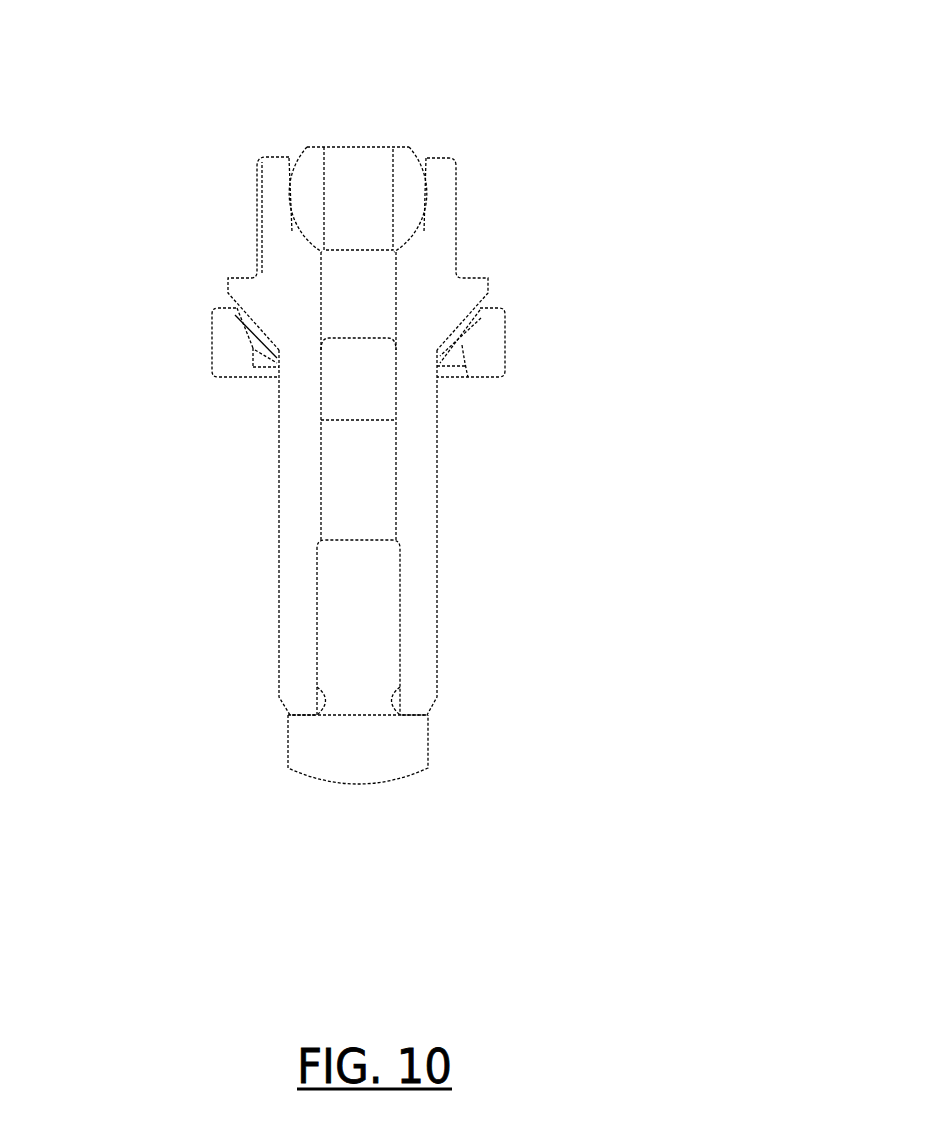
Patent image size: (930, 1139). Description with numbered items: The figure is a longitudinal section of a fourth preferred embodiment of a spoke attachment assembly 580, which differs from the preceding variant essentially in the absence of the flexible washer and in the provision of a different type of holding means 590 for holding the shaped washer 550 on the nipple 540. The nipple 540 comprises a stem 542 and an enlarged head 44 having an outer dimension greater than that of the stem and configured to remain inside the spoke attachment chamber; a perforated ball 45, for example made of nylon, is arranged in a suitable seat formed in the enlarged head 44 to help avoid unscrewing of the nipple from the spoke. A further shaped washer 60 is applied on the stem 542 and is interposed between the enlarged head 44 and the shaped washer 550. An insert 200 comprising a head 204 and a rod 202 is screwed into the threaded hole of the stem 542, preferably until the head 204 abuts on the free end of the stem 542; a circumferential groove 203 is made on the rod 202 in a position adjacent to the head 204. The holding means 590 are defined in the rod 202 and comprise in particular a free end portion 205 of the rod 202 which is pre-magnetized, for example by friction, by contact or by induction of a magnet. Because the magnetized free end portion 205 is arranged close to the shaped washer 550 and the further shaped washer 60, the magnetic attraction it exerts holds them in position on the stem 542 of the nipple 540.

The enlarged head 44 is at (510, 267).
The perforated ball 45 is at (313, 170).
The further shaped washer 60 is at (457, 335).
The insert 200 is at (292, 790).
The rod 202 is at (343, 603).
The circumferential groove 203 is at (392, 700).
The head 204 is at (365, 755).
The free end portion 205 is at (347, 390).
The nipple 540 is at (183, 230).
The stem 542 is at (460, 602).
The shaped washer 550 is at (233, 347).
The spoke attachment assembly 580 is at (492, 85).
The holding means 590 is at (406, 394).